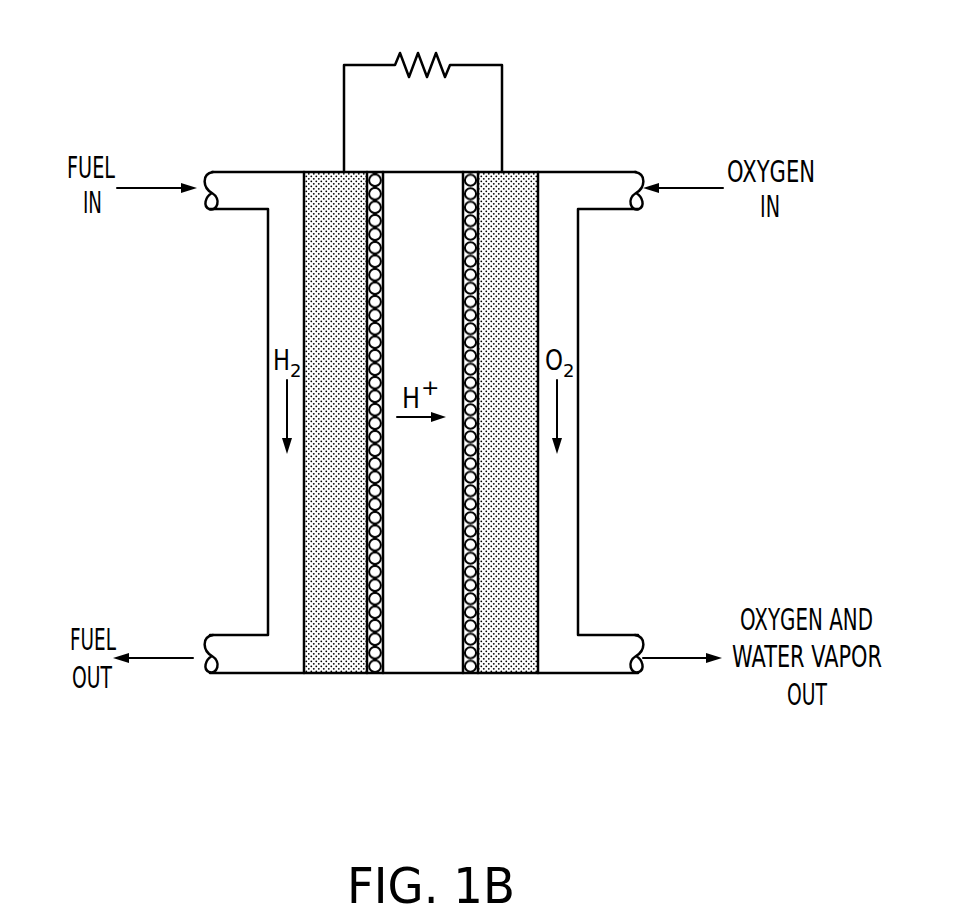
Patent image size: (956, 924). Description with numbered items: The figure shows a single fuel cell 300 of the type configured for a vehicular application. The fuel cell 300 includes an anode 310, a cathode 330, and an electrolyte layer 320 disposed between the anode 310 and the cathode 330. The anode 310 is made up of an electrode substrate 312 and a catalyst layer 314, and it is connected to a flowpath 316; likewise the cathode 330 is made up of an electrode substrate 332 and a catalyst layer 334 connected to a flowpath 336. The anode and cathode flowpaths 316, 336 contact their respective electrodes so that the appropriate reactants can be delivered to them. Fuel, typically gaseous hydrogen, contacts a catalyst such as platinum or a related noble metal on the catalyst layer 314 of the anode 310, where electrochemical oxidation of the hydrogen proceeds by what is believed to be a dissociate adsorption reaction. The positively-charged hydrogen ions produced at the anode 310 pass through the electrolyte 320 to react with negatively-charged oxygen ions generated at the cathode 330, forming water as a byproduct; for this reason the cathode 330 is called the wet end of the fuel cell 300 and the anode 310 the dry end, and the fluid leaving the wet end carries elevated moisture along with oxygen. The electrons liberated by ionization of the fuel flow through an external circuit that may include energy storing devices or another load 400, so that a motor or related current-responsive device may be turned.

The fuel cell 300 is at (193, 87).
The anode 310 is at (370, 682).
The electrode substrate 312 is at (315, 172).
The catalyst layer 314 is at (377, 172).
The flowpath 316 is at (275, 286).
The electrolyte layer 320 is at (465, 682).
The cathode 330 is at (540, 682).
The electrode substrate 332 is at (527, 172).
The catalyst layer 334 is at (467, 172).
The flowpath 336 is at (570, 287).
The load 400 is at (438, 52).